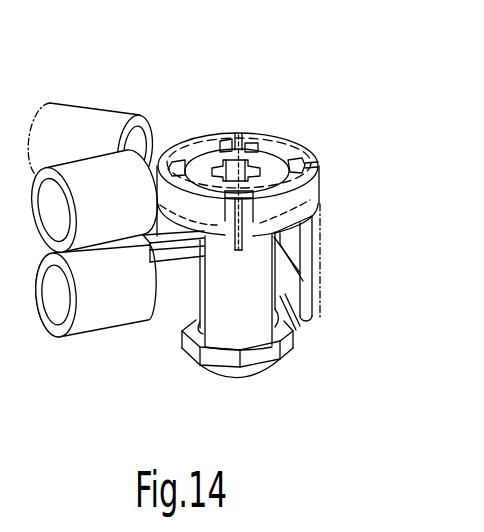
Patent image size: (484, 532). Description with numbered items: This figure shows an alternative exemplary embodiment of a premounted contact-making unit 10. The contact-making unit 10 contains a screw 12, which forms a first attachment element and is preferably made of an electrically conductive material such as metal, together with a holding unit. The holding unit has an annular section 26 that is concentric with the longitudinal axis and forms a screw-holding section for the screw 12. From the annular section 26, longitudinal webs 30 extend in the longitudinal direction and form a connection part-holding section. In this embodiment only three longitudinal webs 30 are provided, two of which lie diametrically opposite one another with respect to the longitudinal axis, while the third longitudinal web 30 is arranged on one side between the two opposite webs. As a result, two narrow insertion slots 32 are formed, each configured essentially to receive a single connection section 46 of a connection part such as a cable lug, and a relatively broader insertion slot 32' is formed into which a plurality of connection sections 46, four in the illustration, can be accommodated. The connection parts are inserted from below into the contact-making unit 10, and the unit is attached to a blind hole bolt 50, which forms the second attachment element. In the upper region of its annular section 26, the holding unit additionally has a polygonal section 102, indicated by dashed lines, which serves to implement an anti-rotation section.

The contact-making unit 10 is at (188, 226).
The screw 12 is at (238, 160).
The annular section 26 is at (254, 192).
The longitudinal web 30 is at (307, 298).
The insertion slot 32 is at (324, 311).
The insertion slot 32' is at (173, 266).
The connection section 46 is at (80, 132).
The blind hole bolt 50 is at (232, 353).
The polygonal section 102 is at (290, 147).